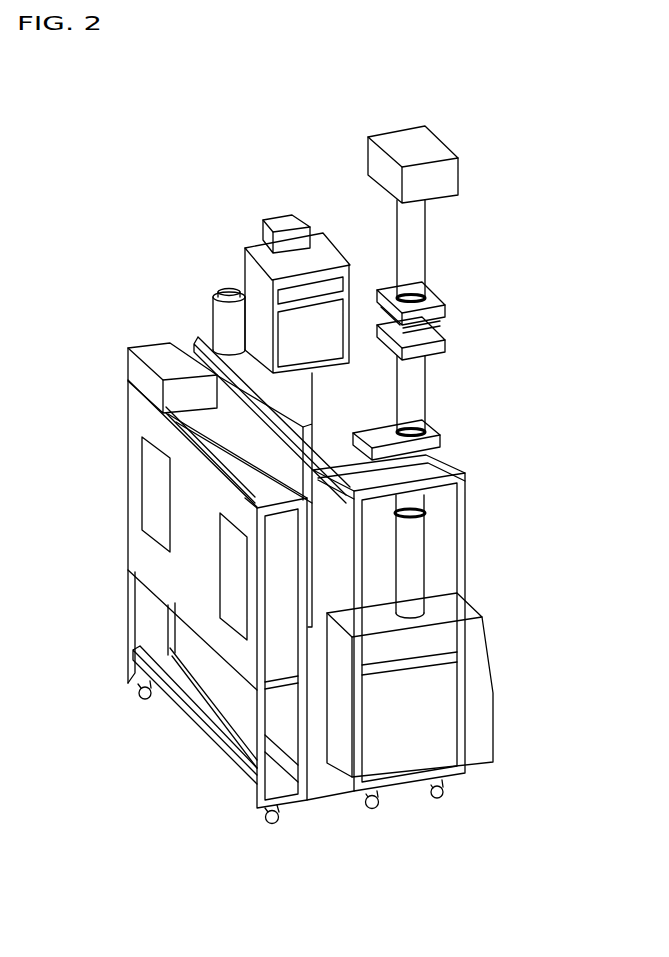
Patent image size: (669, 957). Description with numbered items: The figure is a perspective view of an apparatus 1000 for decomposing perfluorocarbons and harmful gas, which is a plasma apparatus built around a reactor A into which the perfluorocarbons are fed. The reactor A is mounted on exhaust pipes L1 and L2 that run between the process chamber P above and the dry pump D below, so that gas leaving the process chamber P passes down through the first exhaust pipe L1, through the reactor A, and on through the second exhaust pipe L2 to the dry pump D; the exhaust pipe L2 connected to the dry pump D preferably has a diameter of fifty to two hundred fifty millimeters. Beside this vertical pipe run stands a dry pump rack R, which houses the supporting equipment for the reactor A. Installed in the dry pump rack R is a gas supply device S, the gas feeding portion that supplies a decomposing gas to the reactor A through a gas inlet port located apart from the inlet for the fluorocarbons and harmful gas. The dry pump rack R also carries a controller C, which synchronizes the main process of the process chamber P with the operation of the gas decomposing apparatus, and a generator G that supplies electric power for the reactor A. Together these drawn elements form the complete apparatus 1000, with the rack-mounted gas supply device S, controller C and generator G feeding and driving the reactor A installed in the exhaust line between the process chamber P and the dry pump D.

The apparatus for decomposing perfluorocarbons and harmful gas 1000 is at (243, 152).
The gas supply device S is at (137, 377).
The dry pump rack R is at (132, 621).
The controller C is at (290, 333).
The generator G is at (257, 247).
The process chamber P is at (443, 178).
The exhaust pipe L1 is at (415, 247).
The reactor A is at (472, 328).
The exhaust pipe L2 is at (415, 397).
The dry pump D is at (473, 678).